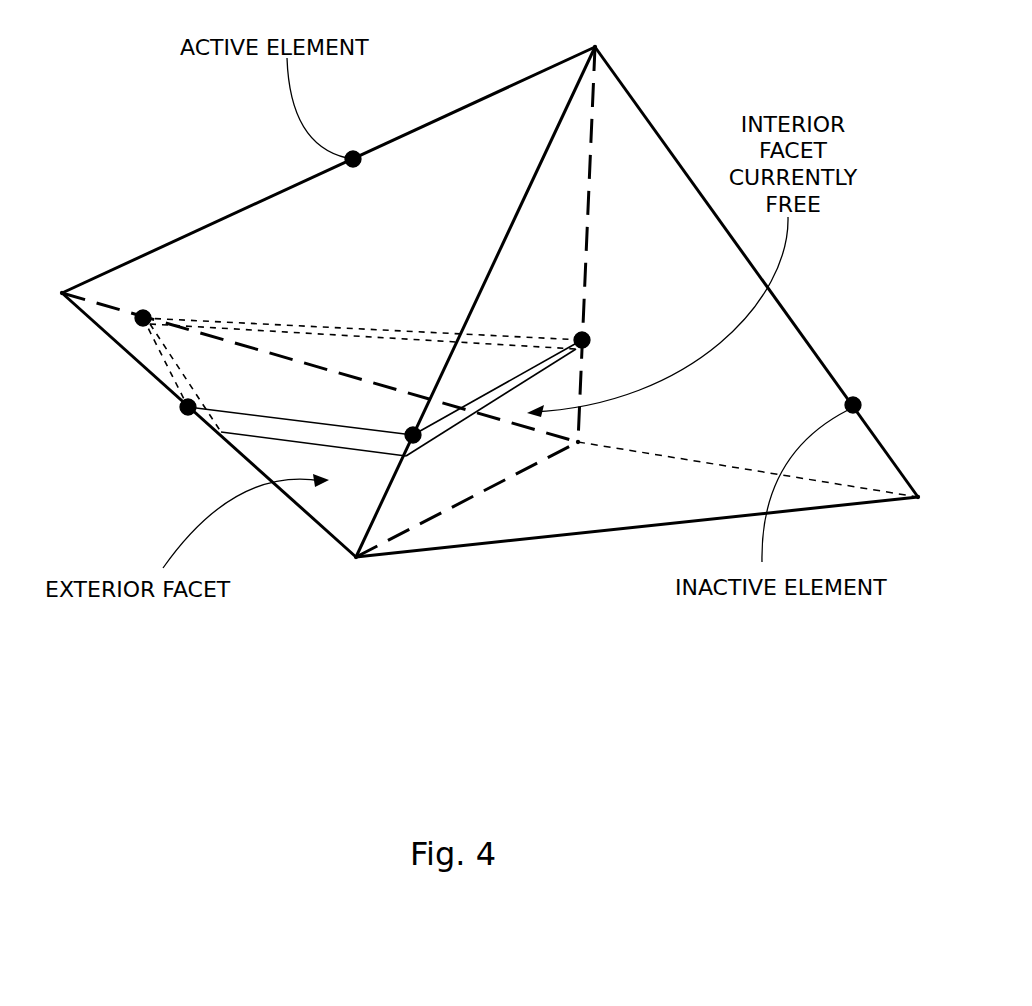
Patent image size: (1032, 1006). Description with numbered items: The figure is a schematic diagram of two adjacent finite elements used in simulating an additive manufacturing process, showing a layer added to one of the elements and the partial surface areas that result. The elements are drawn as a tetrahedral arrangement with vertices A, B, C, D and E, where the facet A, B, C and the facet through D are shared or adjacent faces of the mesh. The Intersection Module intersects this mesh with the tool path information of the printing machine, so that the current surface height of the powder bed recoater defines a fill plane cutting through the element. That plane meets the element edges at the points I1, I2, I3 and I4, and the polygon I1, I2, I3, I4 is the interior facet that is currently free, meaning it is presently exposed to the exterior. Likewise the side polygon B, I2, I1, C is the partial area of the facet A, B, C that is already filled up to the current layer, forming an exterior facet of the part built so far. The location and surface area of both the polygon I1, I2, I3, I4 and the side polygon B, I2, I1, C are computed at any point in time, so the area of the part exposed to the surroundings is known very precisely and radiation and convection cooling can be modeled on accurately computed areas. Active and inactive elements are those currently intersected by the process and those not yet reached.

The vertex A is at (579, 24).
The vertex B is at (581, 471).
The vertex C is at (340, 585).
The vertex D is at (41, 295).
The vertex E is at (914, 525).
The intersection point I1 is at (431, 468).
The intersection point I2 is at (607, 336).
The intersection point I3 is at (161, 292).
The intersection point I4 is at (125, 306).